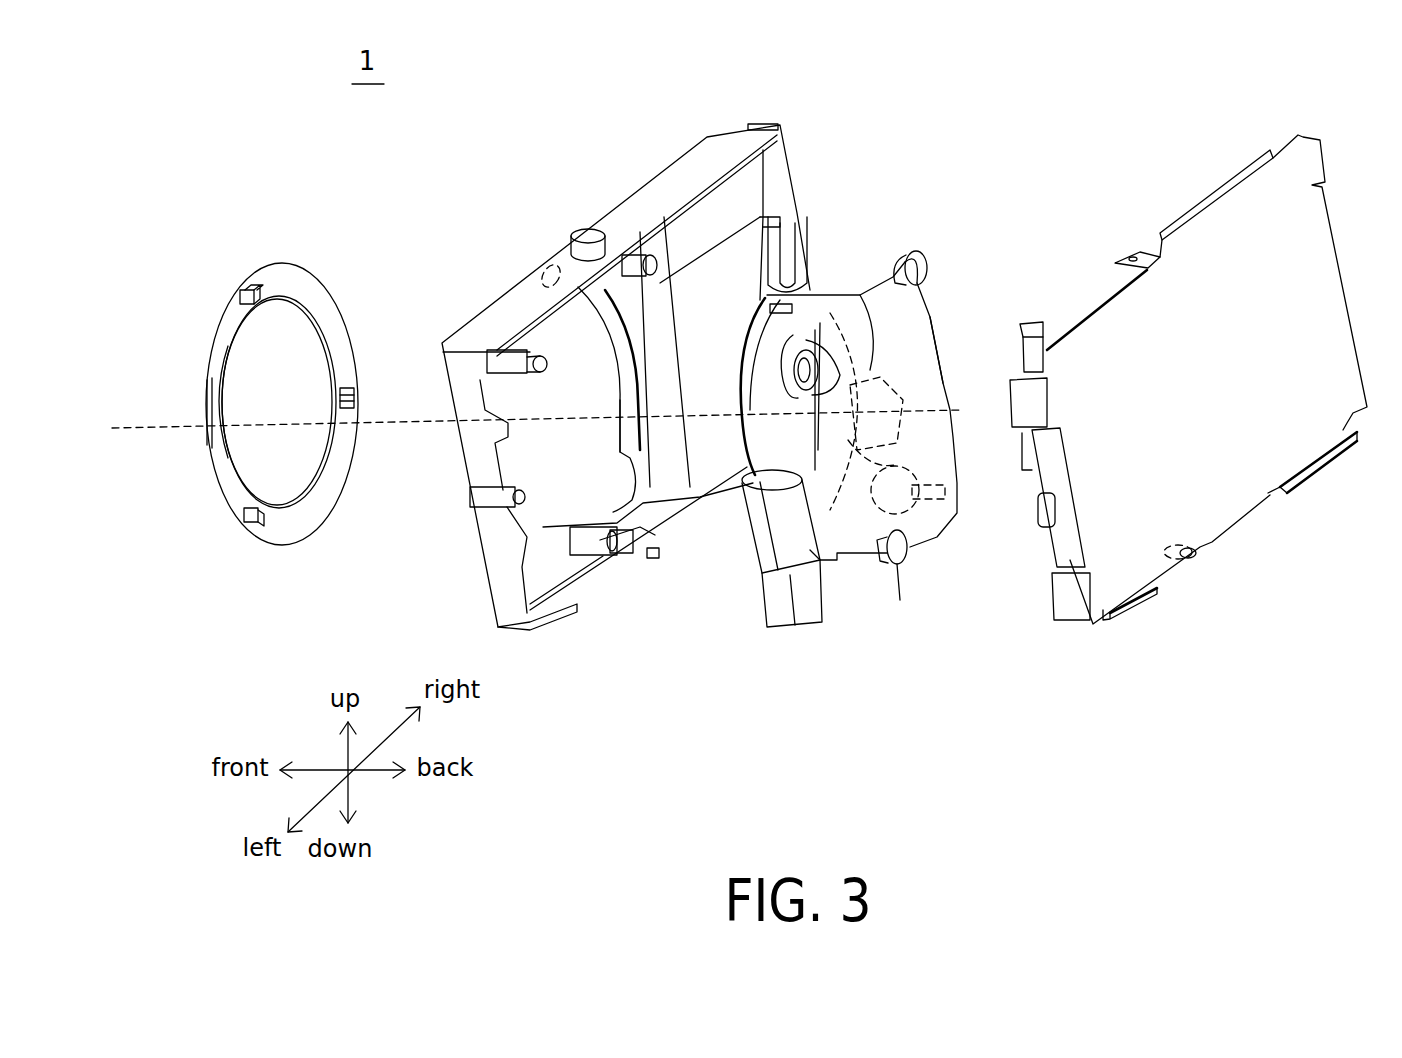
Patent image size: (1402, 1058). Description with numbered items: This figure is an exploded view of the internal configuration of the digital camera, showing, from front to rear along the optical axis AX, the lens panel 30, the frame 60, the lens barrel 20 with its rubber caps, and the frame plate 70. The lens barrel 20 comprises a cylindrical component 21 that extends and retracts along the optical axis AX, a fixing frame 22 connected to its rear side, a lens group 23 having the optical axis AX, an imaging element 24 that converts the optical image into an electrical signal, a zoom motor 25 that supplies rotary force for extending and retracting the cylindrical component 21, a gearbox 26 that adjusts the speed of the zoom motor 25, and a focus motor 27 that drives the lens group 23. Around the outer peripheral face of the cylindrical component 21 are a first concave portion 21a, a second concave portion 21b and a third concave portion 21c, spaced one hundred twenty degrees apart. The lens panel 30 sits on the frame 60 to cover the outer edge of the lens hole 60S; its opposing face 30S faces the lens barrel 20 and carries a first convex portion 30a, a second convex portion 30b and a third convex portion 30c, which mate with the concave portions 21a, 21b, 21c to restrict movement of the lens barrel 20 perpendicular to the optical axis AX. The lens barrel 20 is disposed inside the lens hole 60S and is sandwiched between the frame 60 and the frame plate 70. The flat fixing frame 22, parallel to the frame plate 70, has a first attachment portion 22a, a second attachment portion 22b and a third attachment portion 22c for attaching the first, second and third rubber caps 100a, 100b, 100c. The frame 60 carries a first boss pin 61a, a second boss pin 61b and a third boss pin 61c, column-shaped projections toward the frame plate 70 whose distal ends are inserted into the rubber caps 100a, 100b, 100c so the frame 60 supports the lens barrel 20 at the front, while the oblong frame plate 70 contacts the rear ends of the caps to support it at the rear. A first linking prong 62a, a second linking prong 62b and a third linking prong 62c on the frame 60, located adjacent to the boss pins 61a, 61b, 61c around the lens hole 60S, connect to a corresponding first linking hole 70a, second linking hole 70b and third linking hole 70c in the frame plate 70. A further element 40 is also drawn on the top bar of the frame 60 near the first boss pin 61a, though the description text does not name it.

The lens barrel 20 is at (968, 105).
The cylindrical component 21 is at (752, 305).
The first concave portion 21a is at (825, 290).
The second concave portion 21b is at (870, 457).
The third concave portion 21c is at (753, 520).
The fixing frame 22 is at (935, 330).
The first attachment portion 22a is at (916, 251).
The second attachment portion 22b is at (885, 565).
The third attachment portion 22c is at (798, 347).
The lens group 23 is at (818, 245).
The imaging element 24 is at (945, 352).
The zoom motor 25 is at (760, 565).
The gearbox 26 is at (806, 625).
The focus motor 27 is at (922, 545).
The lens panel 30 is at (310, 245).
The first convex portion 30a is at (241, 297).
The second convex portion 30b is at (352, 388).
The third convex portion 30c is at (252, 535).
The opposing face 30S is at (226, 448).
The spacer 40 is at (580, 235).
The frame 60 is at (733, 145).
The lens hole 60S is at (560, 434).
The first boss pin 61a is at (635, 254).
The second boss pin 61b is at (630, 540).
The third boss pin 61c is at (513, 330).
The first linking prong 62a is at (548, 265).
The second linking prong 62b is at (660, 553).
The third linking prong 62c is at (530, 490).
The frame plate 70 is at (1286, 160).
The first linking hole 70a is at (1137, 245).
The second linking hole 70b is at (1188, 575).
The third linking hole 70c is at (1045, 540).
The first rubber cap 100a is at (920, 285).
The second rubber cap 100b is at (900, 565).
The third rubber cap 100c is at (798, 385).
The optical axis AX is at (196, 420).